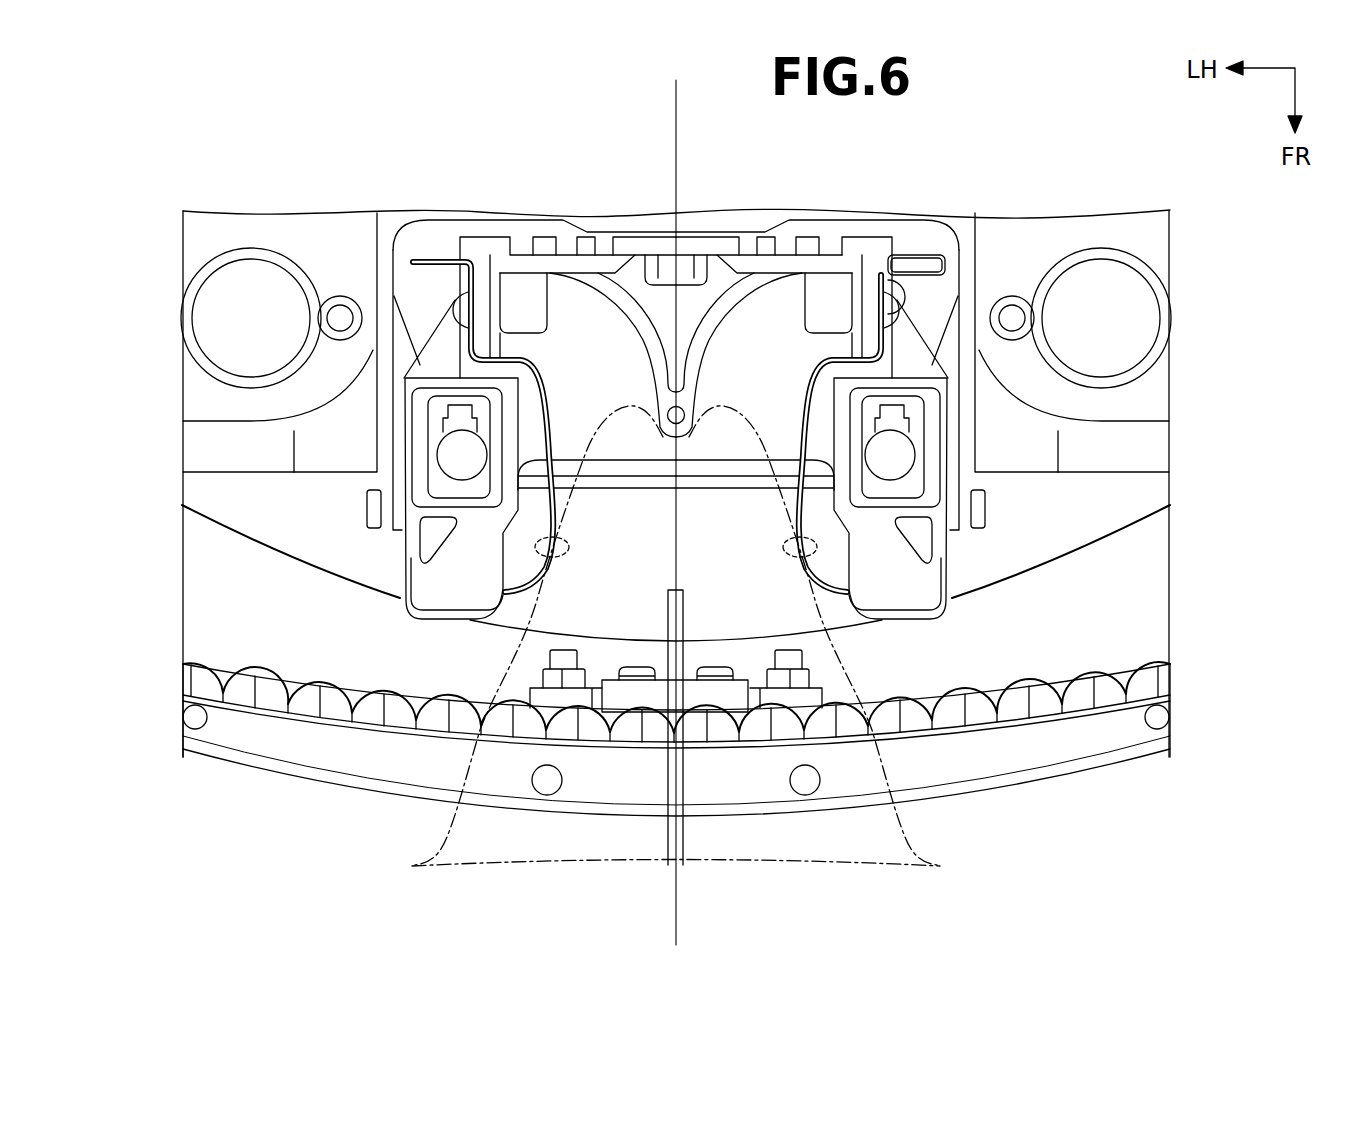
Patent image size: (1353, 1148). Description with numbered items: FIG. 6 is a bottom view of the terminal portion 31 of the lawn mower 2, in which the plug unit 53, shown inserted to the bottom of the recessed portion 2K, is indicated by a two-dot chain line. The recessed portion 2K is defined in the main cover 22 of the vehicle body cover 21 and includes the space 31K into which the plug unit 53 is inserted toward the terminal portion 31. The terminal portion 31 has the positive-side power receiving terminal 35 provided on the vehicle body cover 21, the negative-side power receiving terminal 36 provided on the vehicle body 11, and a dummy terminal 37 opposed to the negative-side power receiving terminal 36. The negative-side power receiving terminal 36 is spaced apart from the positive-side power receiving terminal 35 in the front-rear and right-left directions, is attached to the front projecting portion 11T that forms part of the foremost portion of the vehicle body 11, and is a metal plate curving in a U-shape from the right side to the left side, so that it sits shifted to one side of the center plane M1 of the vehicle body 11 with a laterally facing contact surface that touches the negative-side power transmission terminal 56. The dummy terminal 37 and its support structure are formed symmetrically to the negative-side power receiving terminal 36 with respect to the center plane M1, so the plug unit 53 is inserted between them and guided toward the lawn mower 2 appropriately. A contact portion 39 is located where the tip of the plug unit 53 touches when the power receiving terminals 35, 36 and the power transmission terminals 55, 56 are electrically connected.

The lawn mower 2 is at (300, 136).
The vehicle body 11 is at (1016, 209).
The front projecting portion 11T is at (400, 552).
The vehicle body cover 21 is at (255, 763).
The main cover 22 is at (315, 735).
The terminal portion 31 is at (496, 736).
The space 31K is at (632, 782).
The positive-side power receiving terminal 35 is at (713, 698).
The negative-side power receiving terminal 36 is at (949, 571).
The dummy terminal 37 is at (403, 571).
The contact portion 39 is at (716, 455).
The plug unit 53 is at (488, 857).
The power transmission terminal 55 is at (683, 832).
The negative-side power transmission terminal 56 is at (828, 592).
The recessed portion 2K is at (609, 800).
The center plane M1 is at (676, 497).